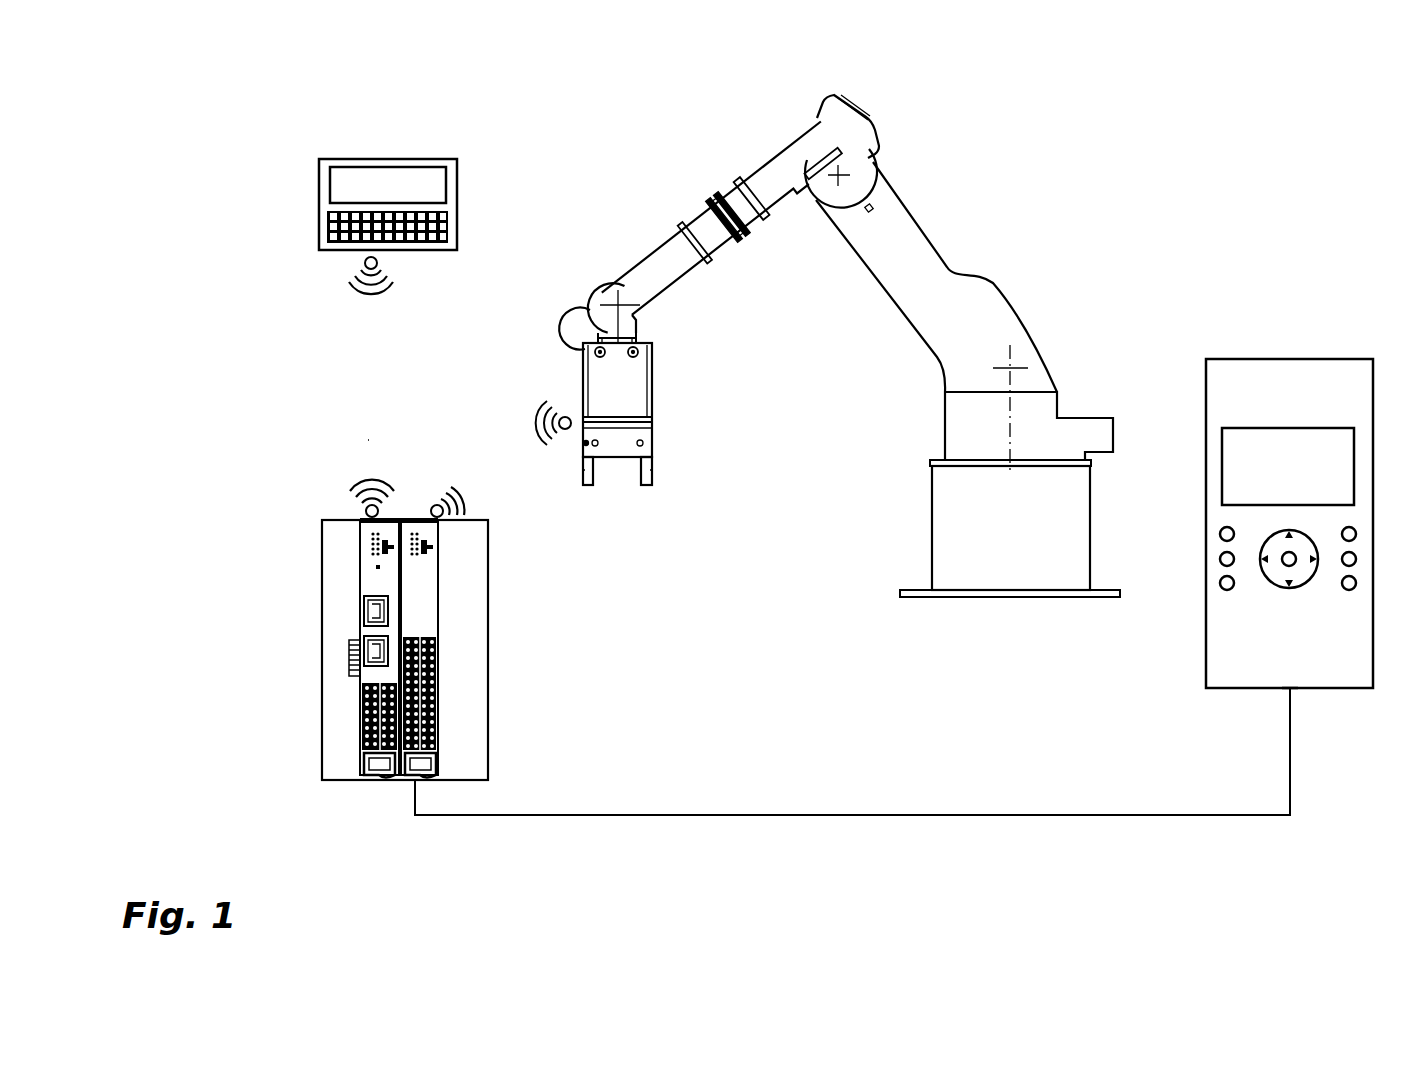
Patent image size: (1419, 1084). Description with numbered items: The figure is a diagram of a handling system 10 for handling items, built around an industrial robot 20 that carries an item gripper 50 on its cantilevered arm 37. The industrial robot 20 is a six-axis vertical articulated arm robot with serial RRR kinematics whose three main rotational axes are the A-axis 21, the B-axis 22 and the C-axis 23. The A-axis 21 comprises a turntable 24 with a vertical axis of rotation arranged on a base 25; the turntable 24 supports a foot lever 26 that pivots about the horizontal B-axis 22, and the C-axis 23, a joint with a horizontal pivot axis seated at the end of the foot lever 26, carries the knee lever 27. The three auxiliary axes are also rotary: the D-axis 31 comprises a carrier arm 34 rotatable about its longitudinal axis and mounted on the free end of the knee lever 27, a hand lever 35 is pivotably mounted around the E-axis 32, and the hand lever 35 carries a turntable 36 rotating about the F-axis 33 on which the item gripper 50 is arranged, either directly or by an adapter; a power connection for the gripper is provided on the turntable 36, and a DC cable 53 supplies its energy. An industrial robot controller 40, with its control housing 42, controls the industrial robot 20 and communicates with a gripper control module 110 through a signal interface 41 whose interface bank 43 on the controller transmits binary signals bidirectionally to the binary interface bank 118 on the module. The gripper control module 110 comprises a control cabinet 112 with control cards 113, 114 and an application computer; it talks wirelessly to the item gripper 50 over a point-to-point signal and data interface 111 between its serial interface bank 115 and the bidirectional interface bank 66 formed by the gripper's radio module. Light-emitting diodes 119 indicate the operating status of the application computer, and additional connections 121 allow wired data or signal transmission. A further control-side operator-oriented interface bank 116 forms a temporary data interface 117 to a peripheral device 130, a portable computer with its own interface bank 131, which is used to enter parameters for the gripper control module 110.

The handling system 10 is at (990, 232).
The industrial robot 20 is at (1010, 268).
The A-axis 21 is at (1010, 452).
The B-axis 22 is at (1010, 368).
The C-axis 23 is at (838, 175).
The turntable 24 is at (960, 422).
The base 25 is at (978, 553).
The foot lever 26 is at (918, 252).
The knee lever 27 is at (717, 230).
The D-axis 31 is at (673, 166).
The E-axis 32 is at (615, 295).
The F-axis 33 is at (618, 305).
The carrier arm 34 is at (695, 243).
The hand lever 35 is at (607, 315).
The turntable 36 is at (608, 338).
The cantilevered arm 37 is at (893, 166).
The industrial robot controller 40 is at (1260, 354).
The signal interface 41 is at (1010, 815).
The control housing 42 is at (1206, 592).
The interface bank 43 is at (1290, 688).
The item gripper 50 is at (623, 464).
The DC cable 53 is at (563, 325).
The bidirectional interface bank 66 is at (583, 402).
The gripper control module 110 is at (318, 527).
The signal and data interface 111 is at (527, 462).
The control cabinet 112 is at (322, 572).
The control card 113 is at (366, 632).
The control card 114 is at (420, 617).
The serial interface bank 115 is at (449, 519).
The control-side operator-oriented interface bank 116 is at (360, 520).
The data interface 117 is at (368, 440).
The binary interface bank 118 is at (421, 782).
The light-emitting diodes 119 is at (375, 547).
The additional connections 121 is at (356, 665).
The peripheral device 130 is at (312, 211).
The interface bank 131 is at (371, 250).